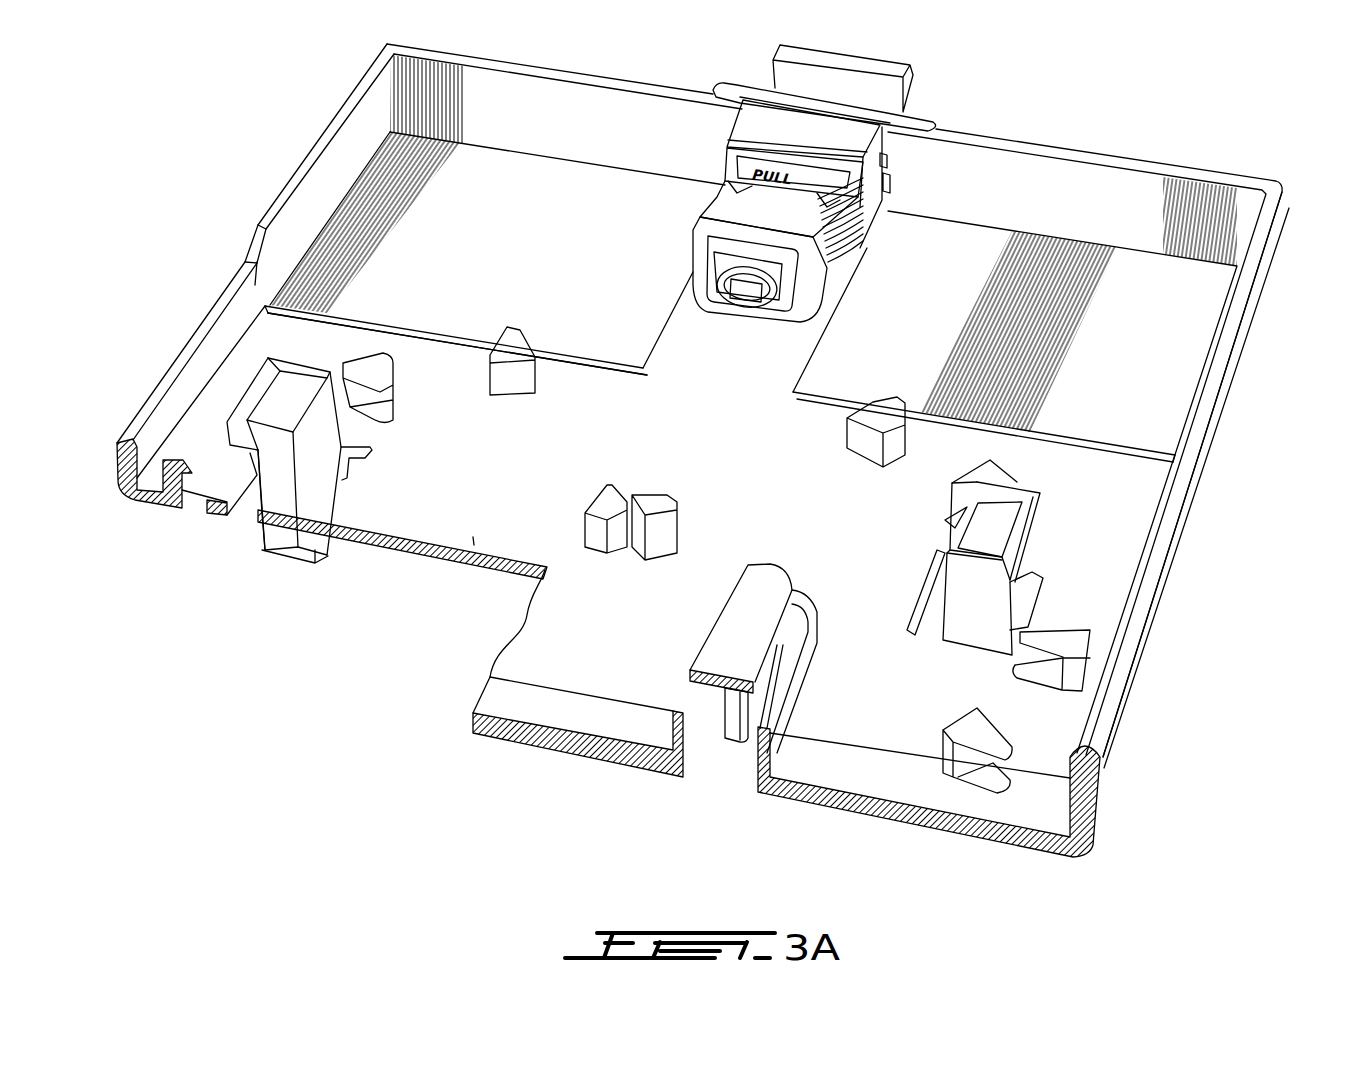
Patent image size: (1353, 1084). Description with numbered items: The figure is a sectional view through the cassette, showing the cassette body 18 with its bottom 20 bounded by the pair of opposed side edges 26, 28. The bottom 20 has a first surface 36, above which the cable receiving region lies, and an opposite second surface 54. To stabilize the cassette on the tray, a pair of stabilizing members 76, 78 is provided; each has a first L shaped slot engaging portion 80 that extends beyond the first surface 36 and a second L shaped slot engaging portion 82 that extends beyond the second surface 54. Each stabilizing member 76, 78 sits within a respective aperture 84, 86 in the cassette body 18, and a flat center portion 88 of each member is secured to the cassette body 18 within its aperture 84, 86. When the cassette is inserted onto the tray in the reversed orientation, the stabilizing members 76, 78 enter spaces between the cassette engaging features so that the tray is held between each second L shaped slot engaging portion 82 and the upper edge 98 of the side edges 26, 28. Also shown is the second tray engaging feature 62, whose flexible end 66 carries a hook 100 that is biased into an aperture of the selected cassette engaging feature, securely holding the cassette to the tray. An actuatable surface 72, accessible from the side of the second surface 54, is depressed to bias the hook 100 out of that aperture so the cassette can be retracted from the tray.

The cassette body 18 is at (1217, 367).
The bottom 20 is at (1110, 323).
The side edge 26 is at (257, 263).
The side edge 28 is at (1137, 672).
The first surface 36 is at (440, 517).
The second surface 54 is at (475, 537).
The second tray engaging feature 62 is at (735, 647).
The flexible end 66 is at (763, 578).
The actuatable surface 72 is at (735, 708).
The stabilizing member 76 is at (275, 460).
The stabilizing member 78 is at (967, 613).
The first L shaped slot engaging portion 80 is at (270, 388).
The second L shaped slot engaging portion 82 is at (313, 540).
The aperture 84 is at (250, 510).
The aperture 86 is at (1023, 592).
The flat center portion 88 is at (260, 527).
The upper edge 98 is at (175, 360).
The hook 100 is at (787, 625).